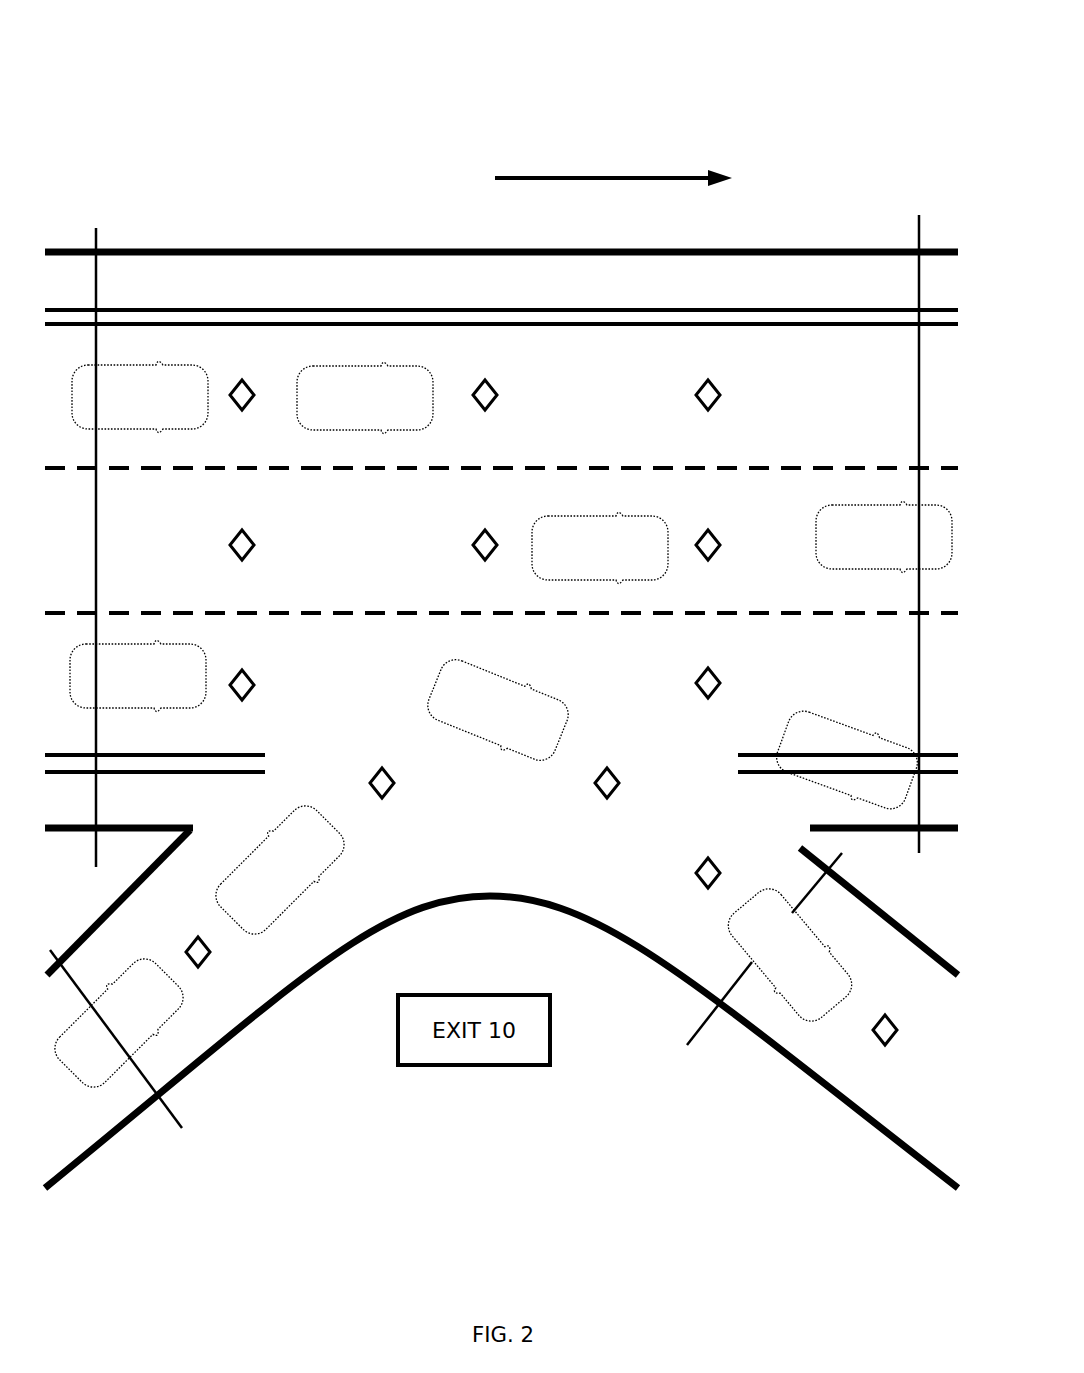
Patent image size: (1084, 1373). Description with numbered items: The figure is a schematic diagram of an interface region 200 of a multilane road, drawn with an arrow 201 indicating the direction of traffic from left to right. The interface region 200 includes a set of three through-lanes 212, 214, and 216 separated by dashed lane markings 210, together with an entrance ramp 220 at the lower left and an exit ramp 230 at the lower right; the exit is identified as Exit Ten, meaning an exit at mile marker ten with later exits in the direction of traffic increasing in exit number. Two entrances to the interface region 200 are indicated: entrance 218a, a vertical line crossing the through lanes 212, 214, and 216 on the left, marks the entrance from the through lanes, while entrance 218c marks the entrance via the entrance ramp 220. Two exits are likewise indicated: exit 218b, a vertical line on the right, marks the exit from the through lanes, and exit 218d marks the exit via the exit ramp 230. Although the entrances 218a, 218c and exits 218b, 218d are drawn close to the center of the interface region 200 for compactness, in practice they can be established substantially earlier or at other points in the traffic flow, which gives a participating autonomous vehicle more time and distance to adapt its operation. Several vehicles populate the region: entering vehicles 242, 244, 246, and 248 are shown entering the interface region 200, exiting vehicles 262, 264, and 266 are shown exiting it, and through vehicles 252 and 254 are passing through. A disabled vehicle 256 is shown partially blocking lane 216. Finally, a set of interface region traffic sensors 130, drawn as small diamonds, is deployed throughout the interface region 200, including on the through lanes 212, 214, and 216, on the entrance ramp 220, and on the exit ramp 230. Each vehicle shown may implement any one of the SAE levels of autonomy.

The interface region 200 is at (156, 63).
The direction of traffic 201 is at (502, 96).
The interface region traffic sensors 130 is at (718, 378).
The lane marking 210 is at (625, 483).
The through-lane 212 is at (622, 396).
The through-lane 214 is at (758, 541).
The through-lane 216 is at (619, 686).
The entrance 218a is at (108, 530).
The exit 218b is at (907, 523).
The entrance 218c is at (137, 1062).
The exit 218d is at (750, 972).
The entrance ramp 220 is at (76, 1110).
The exit ramp 230 is at (931, 1110).
The vehicle E242 242 is at (140, 397).
The vehicle E244 244 is at (138, 676).
The vehicle E246 246 is at (280, 870).
The vehicle E248 248 is at (119, 1023).
The vehicle T252 252 is at (365, 398).
The vehicle T254 254 is at (600, 548).
The disabled vehicle T256 256 is at (847, 759).
The vehicle X262 262 is at (884, 537).
The vehicle X264 264 is at (498, 710).
The vehicle X266 266 is at (790, 955).